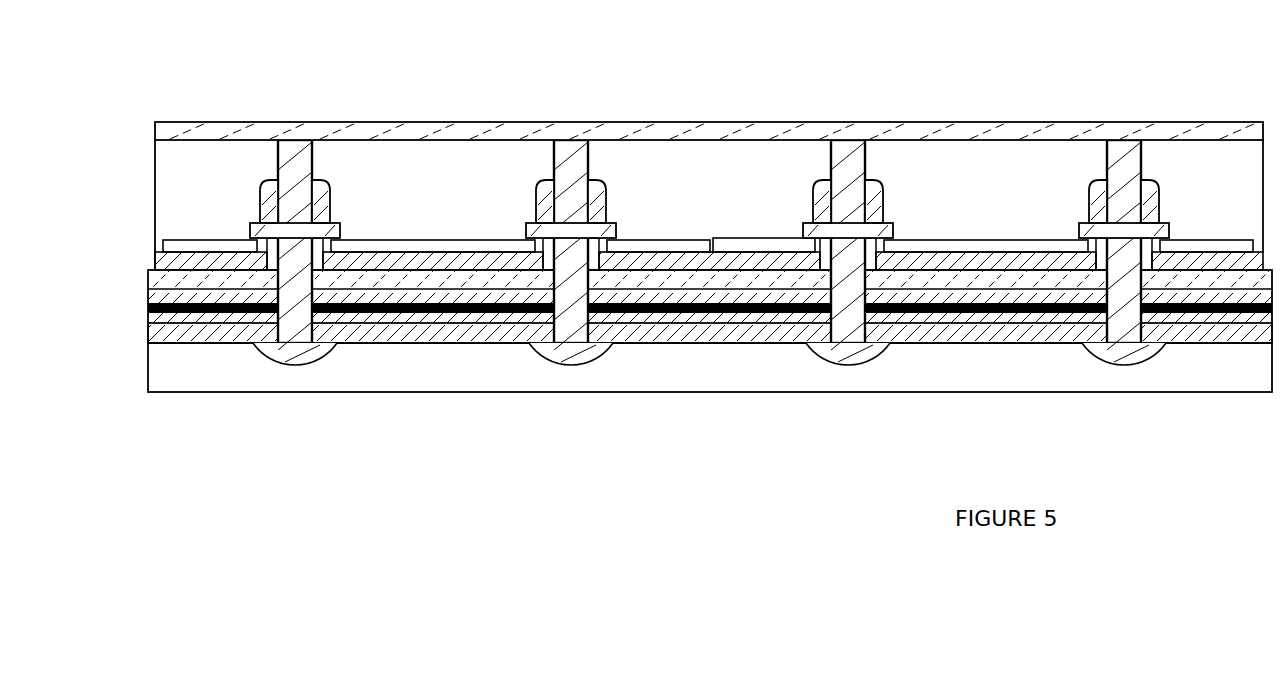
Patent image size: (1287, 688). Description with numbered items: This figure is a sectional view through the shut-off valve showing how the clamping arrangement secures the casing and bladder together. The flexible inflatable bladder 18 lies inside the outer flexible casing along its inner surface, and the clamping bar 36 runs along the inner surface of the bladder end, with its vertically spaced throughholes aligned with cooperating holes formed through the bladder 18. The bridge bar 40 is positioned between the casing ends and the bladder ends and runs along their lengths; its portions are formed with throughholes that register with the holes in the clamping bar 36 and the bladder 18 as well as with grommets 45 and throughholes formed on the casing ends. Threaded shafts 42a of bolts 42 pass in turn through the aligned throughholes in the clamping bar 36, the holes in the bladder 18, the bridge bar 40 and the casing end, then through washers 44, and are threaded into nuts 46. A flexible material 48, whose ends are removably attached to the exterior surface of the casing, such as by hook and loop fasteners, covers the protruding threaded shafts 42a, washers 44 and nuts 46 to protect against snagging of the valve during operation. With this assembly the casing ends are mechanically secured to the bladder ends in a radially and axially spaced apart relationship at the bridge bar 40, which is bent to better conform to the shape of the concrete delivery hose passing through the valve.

The flexible inflatable bladder 18 is at (162, 317).
The clamping bar 36 is at (202, 335).
The bridge bar 40 is at (163, 283).
The bolt 42 is at (302, 355).
The threaded shaft 42a is at (292, 154).
The washer 44 is at (334, 227).
The grommet 45 is at (247, 236).
The nut 46 is at (270, 197).
The flexible material 48 is at (407, 131).